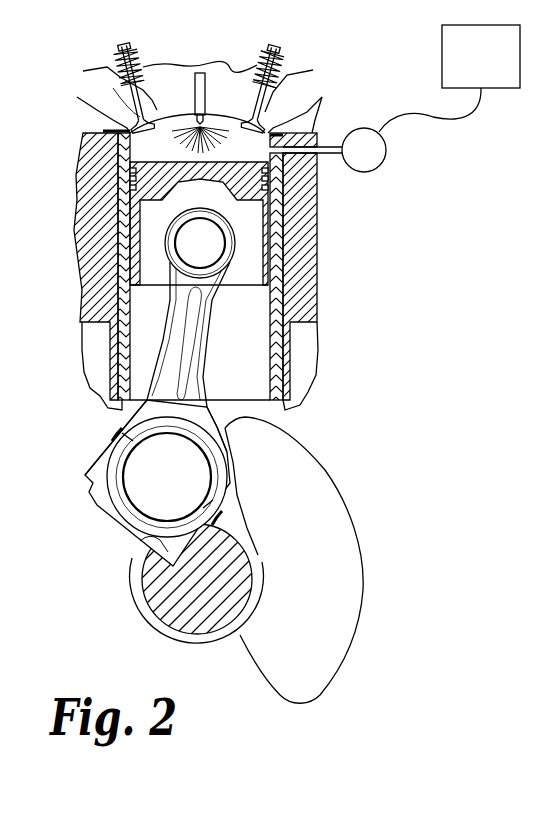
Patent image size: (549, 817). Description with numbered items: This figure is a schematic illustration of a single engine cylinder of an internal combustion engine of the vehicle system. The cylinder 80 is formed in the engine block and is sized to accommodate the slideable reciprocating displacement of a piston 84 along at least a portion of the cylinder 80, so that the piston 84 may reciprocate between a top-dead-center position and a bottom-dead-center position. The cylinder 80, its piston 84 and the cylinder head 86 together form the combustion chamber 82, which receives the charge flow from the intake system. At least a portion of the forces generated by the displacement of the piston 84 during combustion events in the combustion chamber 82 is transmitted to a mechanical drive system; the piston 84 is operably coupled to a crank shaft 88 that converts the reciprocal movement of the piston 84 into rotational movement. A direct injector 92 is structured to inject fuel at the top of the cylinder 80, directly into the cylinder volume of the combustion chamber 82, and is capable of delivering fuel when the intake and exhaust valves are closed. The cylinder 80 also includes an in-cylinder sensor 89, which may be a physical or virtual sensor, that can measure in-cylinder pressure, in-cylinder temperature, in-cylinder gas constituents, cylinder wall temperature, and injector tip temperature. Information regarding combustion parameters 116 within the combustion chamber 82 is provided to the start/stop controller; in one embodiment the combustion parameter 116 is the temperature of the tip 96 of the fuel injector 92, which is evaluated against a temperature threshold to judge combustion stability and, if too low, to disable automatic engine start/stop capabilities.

The cylinder 80 is at (287, 267).
The combustion chamber 82 is at (80, 97).
The piston 84 is at (155, 170).
The cylinder head 86 is at (162, 112).
The crank shaft 88 is at (222, 580).
The in-cylinder sensor 89 is at (385, 163).
The direct injector 92 is at (205, 92).
The tip 96 is at (185, 115).
The combustion parameters 116 is at (500, 70).